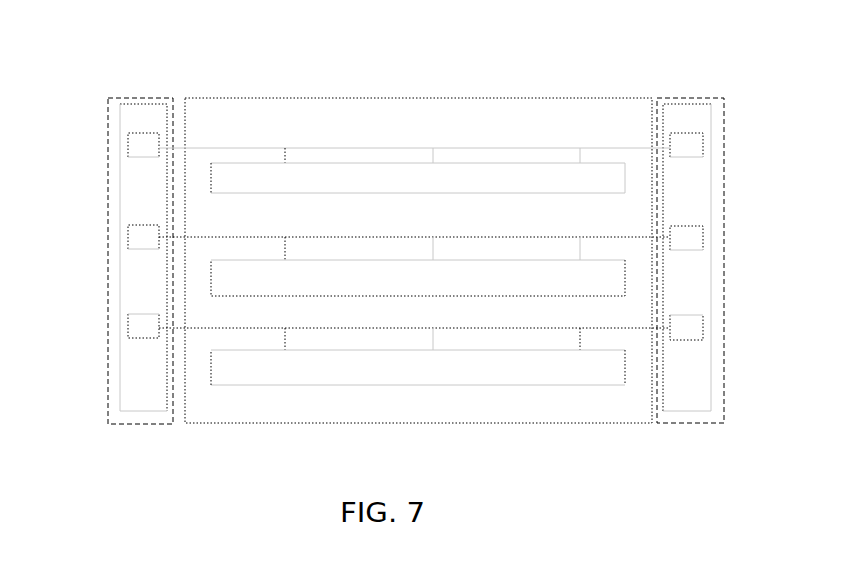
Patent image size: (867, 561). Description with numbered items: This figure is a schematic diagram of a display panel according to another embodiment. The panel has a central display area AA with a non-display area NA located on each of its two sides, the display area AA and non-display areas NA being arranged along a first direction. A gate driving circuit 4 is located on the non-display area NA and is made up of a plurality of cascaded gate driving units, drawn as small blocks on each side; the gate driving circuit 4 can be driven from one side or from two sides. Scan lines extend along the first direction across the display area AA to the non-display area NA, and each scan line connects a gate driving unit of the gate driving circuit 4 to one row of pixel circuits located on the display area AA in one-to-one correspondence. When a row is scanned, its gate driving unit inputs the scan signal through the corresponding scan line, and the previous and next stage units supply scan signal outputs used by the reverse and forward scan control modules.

The non-display area NA is at (142, 97).
The display area AA is at (403, 97).
The gate driving circuit 4 is at (145, 412).